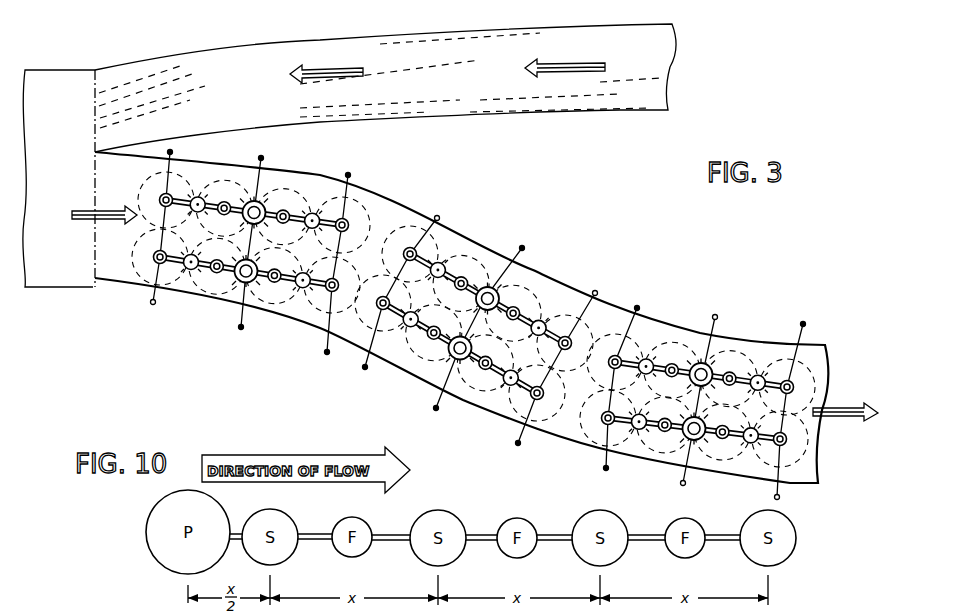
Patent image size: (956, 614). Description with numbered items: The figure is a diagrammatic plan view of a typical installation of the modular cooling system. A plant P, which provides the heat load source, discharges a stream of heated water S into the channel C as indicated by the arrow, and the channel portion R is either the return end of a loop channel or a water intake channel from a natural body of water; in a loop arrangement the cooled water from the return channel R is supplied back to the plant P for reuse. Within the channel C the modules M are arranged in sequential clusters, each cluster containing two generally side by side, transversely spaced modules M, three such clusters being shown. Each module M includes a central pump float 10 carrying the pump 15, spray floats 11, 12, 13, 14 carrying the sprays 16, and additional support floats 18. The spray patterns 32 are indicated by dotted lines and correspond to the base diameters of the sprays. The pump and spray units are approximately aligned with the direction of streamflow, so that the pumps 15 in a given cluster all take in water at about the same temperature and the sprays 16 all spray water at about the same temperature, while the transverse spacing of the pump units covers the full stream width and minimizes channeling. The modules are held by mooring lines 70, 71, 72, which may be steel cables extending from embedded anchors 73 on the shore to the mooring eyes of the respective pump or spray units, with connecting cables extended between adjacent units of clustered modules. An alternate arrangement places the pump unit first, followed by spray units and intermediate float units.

The central pump float 10 is at (250, 287).
The spray float 11 is at (233, 281).
The spray float 12 is at (155, 264).
The spray float 13 is at (247, 281).
The spray float 14 is at (346, 258).
The pump 15 is at (240, 281).
The spray 16 is at (156, 253).
The support float 18 is at (188, 259).
The spray pattern 32 is at (174, 177).
The mooring line 70 is at (425, 216).
The mooring line 71 is at (498, 287).
The mooring line 72 is at (603, 308).
The embedded anchor 73 is at (441, 217).
The return channel R is at (273, 41).
The stream of heated water S is at (467, 100).
The channel C is at (310, 176).
The plant P is at (67, 277).
The module M is at (352, 217).